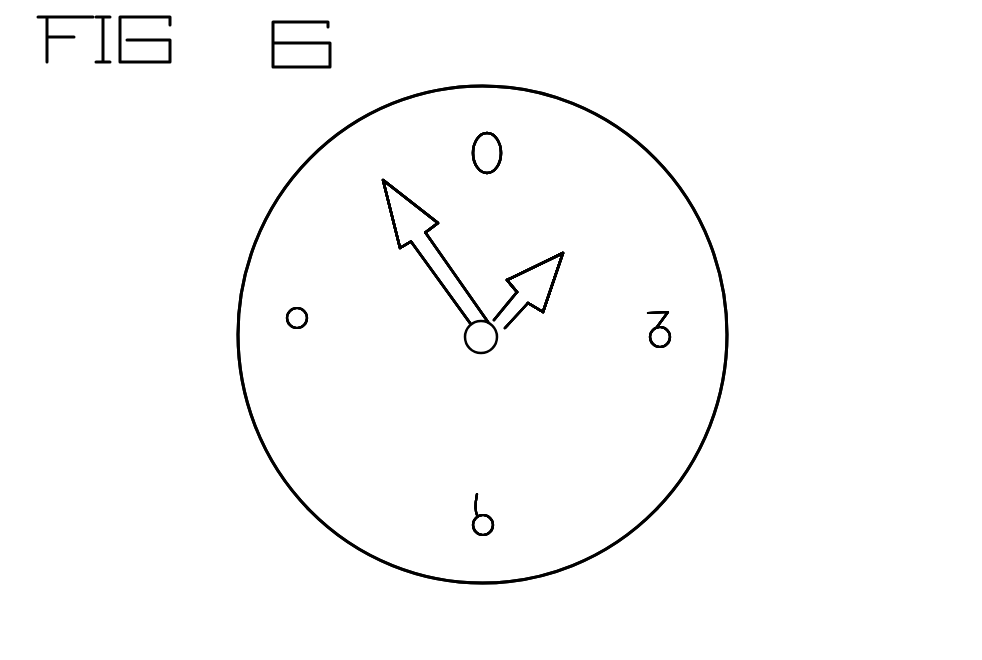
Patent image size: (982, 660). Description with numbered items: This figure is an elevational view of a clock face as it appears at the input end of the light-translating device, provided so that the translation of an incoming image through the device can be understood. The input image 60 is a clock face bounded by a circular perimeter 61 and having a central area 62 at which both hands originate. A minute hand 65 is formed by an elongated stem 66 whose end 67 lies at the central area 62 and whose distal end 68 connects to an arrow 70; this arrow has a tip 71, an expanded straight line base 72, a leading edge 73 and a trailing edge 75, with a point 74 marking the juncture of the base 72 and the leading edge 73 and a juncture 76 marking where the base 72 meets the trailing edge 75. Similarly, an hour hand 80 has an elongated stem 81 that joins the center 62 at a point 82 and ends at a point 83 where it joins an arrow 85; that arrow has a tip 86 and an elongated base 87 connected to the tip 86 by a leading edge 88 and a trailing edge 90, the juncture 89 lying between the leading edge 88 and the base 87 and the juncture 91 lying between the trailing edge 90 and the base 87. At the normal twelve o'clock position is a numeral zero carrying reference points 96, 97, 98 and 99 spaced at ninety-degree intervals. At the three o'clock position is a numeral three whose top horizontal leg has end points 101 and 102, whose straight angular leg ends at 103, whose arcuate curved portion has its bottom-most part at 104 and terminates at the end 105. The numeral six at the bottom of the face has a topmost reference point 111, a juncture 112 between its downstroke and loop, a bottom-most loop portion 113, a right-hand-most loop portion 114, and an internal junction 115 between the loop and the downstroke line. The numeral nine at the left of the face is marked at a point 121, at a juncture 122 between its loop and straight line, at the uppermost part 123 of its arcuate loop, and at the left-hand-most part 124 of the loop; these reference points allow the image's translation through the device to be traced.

The input image 60 is at (742, 267).
The circular perimeter 61 is at (282, 431).
The central area 62 is at (478, 338).
The minute hand 65 is at (418, 253).
The elongated stem 66 is at (439, 280).
The end 67 is at (467, 322).
The distal end 68 is at (419, 270).
The arrow 70 is at (383, 202).
The tip 71 is at (380, 178).
The expanded straight line base 72 is at (432, 232).
The leading edge 73 is at (395, 188).
The point 74 is at (441, 223).
The trailing edge 75 is at (384, 222).
The juncture 76 is at (400, 249).
The hour hand 80 is at (608, 238).
The elongated stem 81 is at (515, 320).
The point 82 is at (500, 338).
The point 83 is at (529, 307).
The arrow 85 is at (552, 250).
The tip 86 is at (568, 247).
The elongated base 87 is at (504, 290).
The leading edge 88 is at (556, 282).
The juncture 89 is at (547, 310).
The trailing edge 90 is at (540, 262).
The juncture 91 is at (505, 278).
The reference point 96 is at (487, 130).
The reference point 97 is at (489, 175).
The reference point 98 is at (466, 148).
The reference point 99 is at (502, 152).
The end point of top horizontal leg 101 is at (647, 308).
The end point of top horizontal leg 102 is at (672, 308).
The end of straight angular leg 103 is at (651, 328).
The bottom most part of arcuate curved surface 104 is at (665, 353).
The end of arcuate portion 105 is at (646, 342).
The reference point 111 is at (477, 495).
The juncture 112 is at (465, 528).
The bottom most portion of arcuate loop 113 is at (485, 535).
The right-hand most portion of loop 114 is at (498, 527).
The internal junction 115 is at (477, 515).
The circle bottom 121 is at (303, 328).
The juncture 122 is at (307, 321).
The uppermost part of arcuate loop 123 is at (294, 308).
The left-hand most part of loop 124 is at (287, 318).